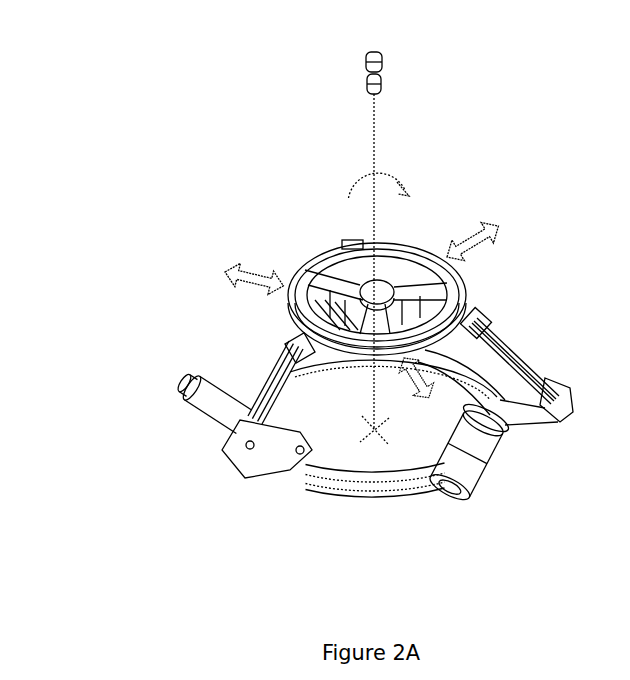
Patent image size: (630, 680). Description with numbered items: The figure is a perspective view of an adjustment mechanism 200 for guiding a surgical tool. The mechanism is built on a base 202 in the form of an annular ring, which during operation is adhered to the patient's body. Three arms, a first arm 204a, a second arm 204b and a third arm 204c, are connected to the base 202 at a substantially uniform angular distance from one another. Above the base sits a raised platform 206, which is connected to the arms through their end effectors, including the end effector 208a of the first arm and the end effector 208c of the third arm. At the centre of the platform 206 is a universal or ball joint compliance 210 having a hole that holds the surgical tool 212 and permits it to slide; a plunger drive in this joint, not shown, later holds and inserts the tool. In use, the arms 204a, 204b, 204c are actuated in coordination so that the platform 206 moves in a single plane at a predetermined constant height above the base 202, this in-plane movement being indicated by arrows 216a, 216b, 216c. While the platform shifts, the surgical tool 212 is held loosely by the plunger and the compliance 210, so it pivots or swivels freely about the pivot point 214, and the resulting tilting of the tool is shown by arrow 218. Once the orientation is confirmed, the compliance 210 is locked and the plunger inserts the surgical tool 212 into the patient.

The adjustment mechanism 200 is at (132, 508).
The base 202 is at (322, 492).
The first arm 204a is at (273, 380).
The second arm 204b is at (325, 313).
The third arm 204c is at (347, 243).
The raised platform 206 is at (300, 268).
The end effector 208a is at (285, 353).
The end effector 208c is at (487, 322).
The universal or ball joint compliance 210 is at (384, 283).
The surgical tool 212 is at (378, 150).
The pivot point 214 is at (377, 432).
The arrow 216a is at (489, 228).
The arrow 216b is at (226, 268).
The arrow 216c is at (428, 390).
The arrow 218 is at (401, 186).